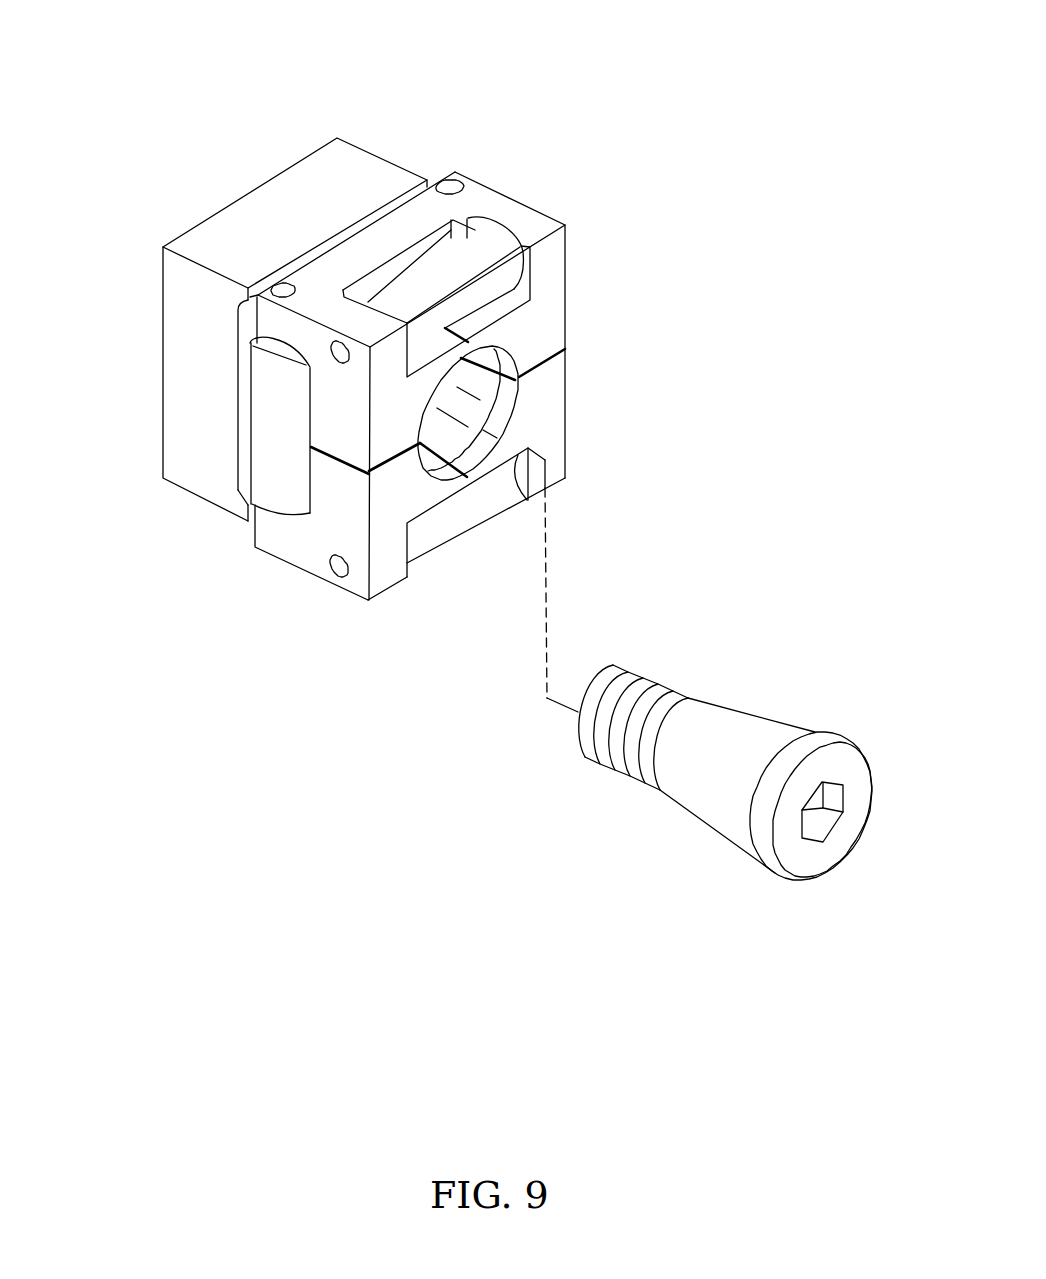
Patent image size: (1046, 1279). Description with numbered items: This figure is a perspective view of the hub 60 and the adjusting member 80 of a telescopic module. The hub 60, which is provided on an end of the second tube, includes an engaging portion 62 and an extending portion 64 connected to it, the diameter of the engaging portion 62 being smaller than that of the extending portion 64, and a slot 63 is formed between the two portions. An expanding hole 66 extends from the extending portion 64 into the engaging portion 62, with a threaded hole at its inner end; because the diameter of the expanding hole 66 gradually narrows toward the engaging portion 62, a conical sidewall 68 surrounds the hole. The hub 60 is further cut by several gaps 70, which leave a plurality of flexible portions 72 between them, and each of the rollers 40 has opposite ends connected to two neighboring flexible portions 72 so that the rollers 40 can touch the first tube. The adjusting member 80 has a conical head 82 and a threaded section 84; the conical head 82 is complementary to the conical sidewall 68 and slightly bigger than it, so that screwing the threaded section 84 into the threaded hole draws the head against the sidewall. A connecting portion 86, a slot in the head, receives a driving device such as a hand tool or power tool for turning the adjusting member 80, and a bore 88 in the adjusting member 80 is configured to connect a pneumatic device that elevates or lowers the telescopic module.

The roller 40 is at (270, 439).
The hub 60 is at (428, 140).
The engaging portion 62 is at (265, 207).
The slot 63 is at (368, 212).
The extending portion 64 is at (528, 204).
The expanding hole 66 is at (512, 418).
The conical sidewall 68 is at (517, 380).
The gap 70 is at (543, 355).
The flexible portion 72 is at (293, 325).
The adjusting member 80 is at (677, 817).
The conical head 82 is at (768, 733).
The threaded section 84 is at (605, 760).
The connecting portion 86 is at (812, 832).
The bore 88 is at (817, 807).